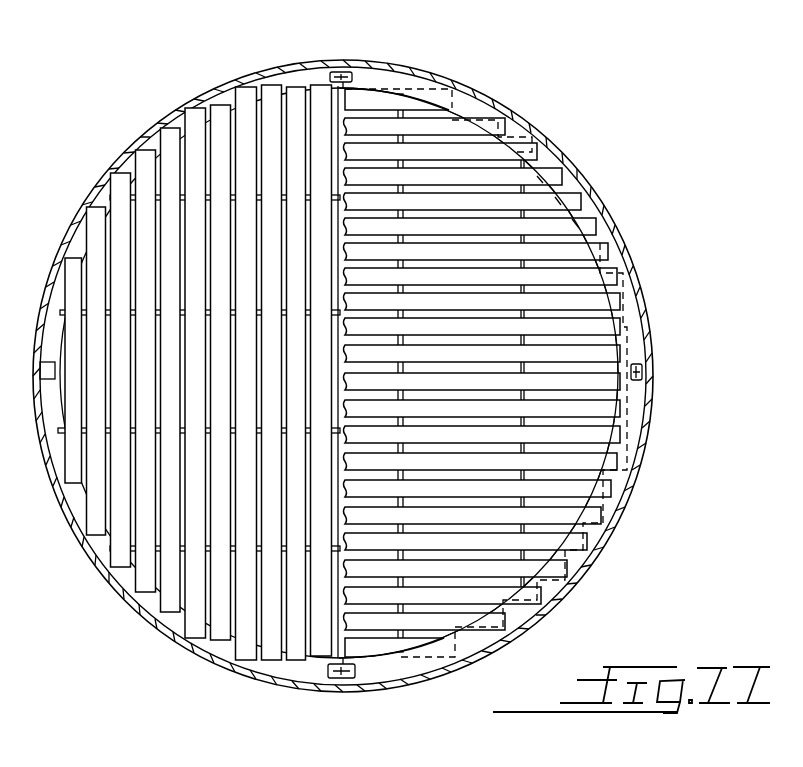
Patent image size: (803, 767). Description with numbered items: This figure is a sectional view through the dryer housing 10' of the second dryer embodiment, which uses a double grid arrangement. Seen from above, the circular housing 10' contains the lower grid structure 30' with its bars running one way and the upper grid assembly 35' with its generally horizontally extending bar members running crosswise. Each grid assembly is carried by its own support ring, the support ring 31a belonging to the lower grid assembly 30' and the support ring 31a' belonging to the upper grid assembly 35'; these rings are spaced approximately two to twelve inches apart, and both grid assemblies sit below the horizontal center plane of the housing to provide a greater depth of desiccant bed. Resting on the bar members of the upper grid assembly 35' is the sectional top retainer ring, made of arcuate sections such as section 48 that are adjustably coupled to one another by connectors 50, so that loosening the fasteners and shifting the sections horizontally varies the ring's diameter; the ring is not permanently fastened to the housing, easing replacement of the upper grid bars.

The dryer housing 10' is at (377, 376).
The lower grid structure 30' is at (198, 332).
The support ring 31a is at (185, 421).
The support ring 31a' is at (523, 190).
The upper grid assembly 35' is at (482, 363).
The arcuate section 48 is at (478, 106).
The connector 50 is at (364, 72).